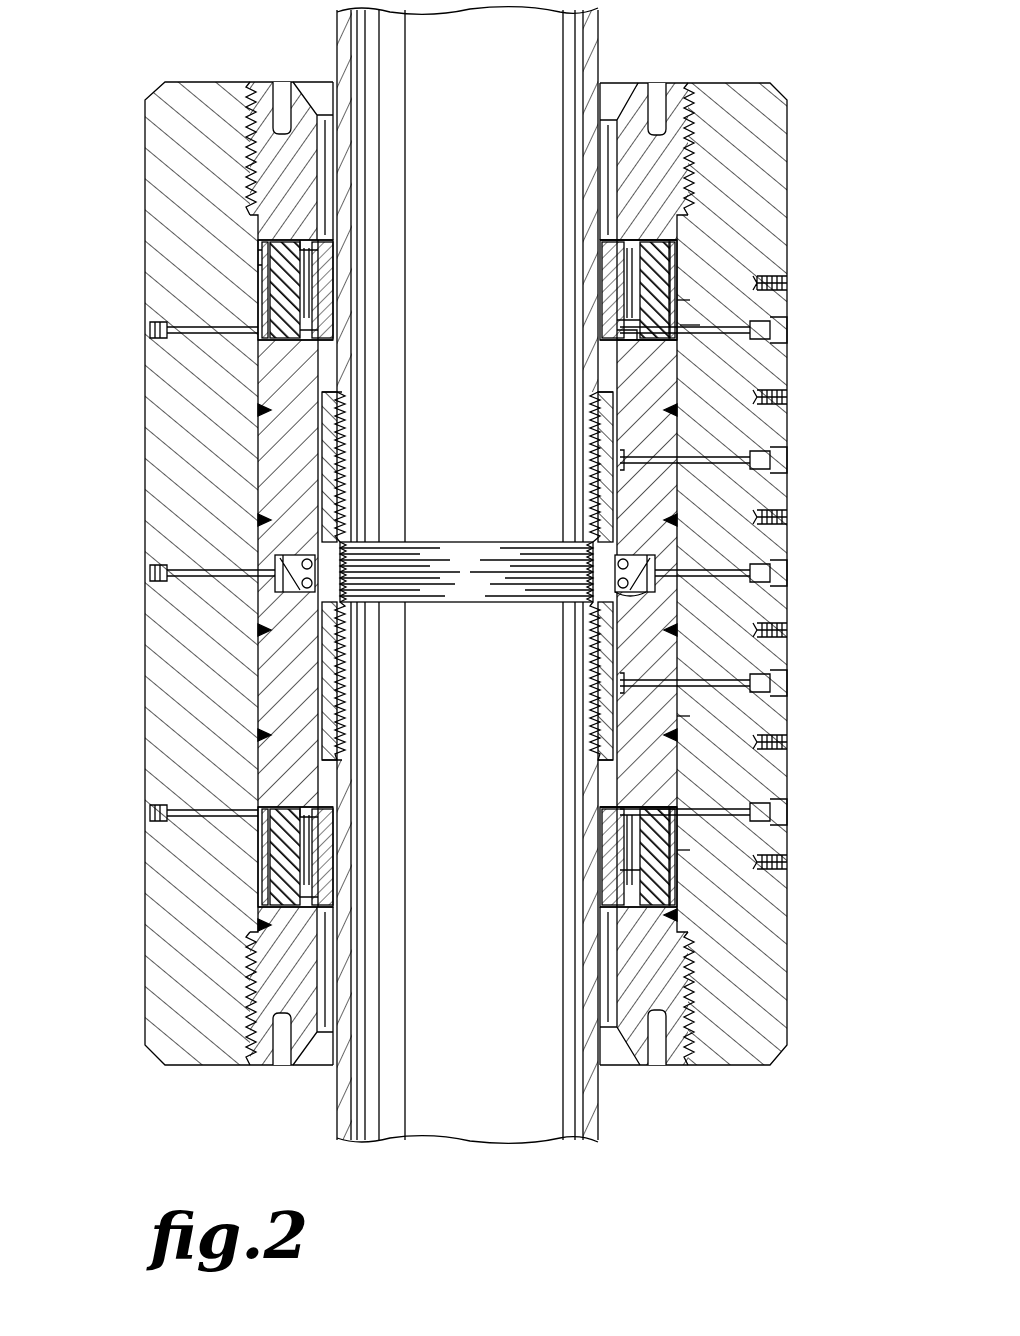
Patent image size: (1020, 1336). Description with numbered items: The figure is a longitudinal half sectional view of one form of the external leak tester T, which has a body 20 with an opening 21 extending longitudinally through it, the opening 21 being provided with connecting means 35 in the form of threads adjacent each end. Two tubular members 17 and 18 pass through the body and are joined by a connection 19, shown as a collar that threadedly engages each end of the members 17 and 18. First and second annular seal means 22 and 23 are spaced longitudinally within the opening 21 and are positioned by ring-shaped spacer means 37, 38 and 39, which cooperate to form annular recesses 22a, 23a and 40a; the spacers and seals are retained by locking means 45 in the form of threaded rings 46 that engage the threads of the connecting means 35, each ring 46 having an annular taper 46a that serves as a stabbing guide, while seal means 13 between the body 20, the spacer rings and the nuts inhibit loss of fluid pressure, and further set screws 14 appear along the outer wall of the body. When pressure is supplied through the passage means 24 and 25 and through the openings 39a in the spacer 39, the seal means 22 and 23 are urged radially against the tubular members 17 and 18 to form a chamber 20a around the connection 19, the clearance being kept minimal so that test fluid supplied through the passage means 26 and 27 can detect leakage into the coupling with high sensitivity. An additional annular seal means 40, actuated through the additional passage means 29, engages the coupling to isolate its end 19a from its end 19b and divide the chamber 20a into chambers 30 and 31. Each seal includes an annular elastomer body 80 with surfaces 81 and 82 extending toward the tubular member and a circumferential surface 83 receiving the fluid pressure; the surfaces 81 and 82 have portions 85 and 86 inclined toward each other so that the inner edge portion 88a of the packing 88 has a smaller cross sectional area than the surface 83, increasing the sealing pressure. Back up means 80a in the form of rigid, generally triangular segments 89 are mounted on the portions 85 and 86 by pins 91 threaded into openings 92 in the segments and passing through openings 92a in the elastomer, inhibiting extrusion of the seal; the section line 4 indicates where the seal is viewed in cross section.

The seal means 13 is at (258, 410).
The set screws 14 is at (672, 432).
The tubular member 17 is at (592, 55).
The tubular member 18 is at (595, 1020).
The connection 19 is at (585, 575).
The end of the coupling 19a is at (600, 400).
The end of the coupling 19b is at (600, 760).
The body 20 is at (785, 105).
The chamber 20a is at (258, 455).
The opening 21 is at (672, 410).
The first annular seal means 22 is at (672, 312).
The annular recess 22a is at (258, 282).
The second annular seal means 23 is at (672, 852).
The annular recess 23a is at (258, 866).
The passage means 24 is at (737, 330).
The passage means 25 is at (742, 806).
The passage means 26 is at (740, 468).
The passage means 27 is at (740, 680).
The additional fluid passage means 29 is at (742, 572).
The chamber 30 is at (600, 393).
The chamber 31 is at (606, 822).
The connecting means 35 is at (692, 110).
The spacer means 37 is at (680, 876).
The spacer means 38 is at (672, 716).
The spacer 39 is at (640, 297).
The openings 39a is at (258, 345).
The additional annular seal means 40 is at (616, 555).
The annular recess 40a is at (640, 595).
The locking means 45 is at (252, 80).
The threaded ring 46 is at (268, 100).
The annular taper 46a is at (318, 100).
The annular elastomer body 80 is at (668, 272).
The back up means 80a is at (318, 262).
The surface 81 is at (720, 182).
The surface 82 is at (650, 362).
The circumferential surface 83 is at (700, 332).
The surface portion 85 is at (618, 245).
The surface portion 86 is at (612, 322).
The packing 88 is at (612, 258).
The annular inner edge portion 88a is at (340, 300).
The rigid segments 89 is at (318, 240).
The pin 91 is at (252, 262).
The openings 92 is at (318, 258).
The openings 92a is at (252, 328).
The section line 4- 4 is at (556, 243).
The external tester T is at (834, 142).